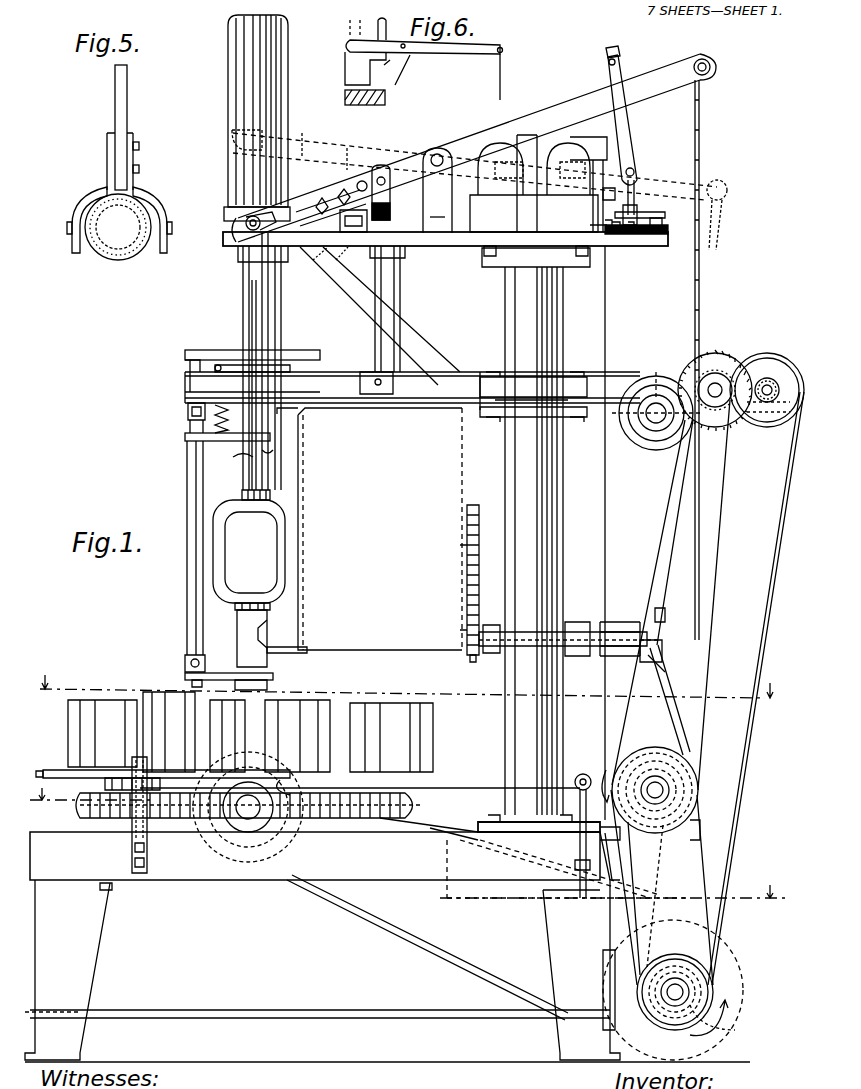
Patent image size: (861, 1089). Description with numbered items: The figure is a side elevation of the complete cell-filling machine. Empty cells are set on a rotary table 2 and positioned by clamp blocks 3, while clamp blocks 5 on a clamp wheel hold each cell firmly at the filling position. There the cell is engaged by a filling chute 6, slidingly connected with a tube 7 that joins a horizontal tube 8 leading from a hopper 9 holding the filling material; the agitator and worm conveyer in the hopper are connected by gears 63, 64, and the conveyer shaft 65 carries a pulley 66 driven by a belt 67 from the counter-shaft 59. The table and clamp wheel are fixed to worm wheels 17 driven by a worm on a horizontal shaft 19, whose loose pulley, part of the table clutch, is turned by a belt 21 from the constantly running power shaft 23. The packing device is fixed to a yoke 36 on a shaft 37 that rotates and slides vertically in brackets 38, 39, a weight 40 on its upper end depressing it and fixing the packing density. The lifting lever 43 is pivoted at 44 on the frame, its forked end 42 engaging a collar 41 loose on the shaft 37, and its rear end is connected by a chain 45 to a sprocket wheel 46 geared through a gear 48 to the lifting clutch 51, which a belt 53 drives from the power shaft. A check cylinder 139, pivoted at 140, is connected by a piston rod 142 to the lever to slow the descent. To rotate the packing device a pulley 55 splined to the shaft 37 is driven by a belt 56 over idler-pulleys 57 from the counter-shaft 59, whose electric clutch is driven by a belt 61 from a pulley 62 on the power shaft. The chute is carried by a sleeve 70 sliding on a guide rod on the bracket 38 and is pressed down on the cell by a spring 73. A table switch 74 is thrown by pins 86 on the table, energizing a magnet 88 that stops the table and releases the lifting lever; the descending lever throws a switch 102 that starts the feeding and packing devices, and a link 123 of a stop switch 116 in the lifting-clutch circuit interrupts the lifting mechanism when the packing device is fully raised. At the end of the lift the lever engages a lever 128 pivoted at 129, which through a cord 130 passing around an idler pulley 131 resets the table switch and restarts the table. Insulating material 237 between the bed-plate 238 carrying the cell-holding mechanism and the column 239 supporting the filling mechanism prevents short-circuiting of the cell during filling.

In FIG. 1, the rotary table 2 is at (413, 688).
In FIG. 1, the clamp blocks 3 is at (108, 687).
In FIG. 1, the clamp blocks 5 is at (390, 733).
In FIG. 1, the filling chute 6 is at (267, 683).
In FIG. 1, the tube 7 is at (250, 653).
In FIG. 1, the horizontal tube 8 is at (258, 640).
In FIG. 1, the hopper 9 is at (364, 530).
In FIG. 1, the worm wheels 17 is at (100, 805).
In FIG. 1, the horizontal shaft 19 is at (240, 820).
In FIG. 1, the belt 21 is at (420, 938).
In FIG. 1, the power shaft 23 is at (682, 995).
In FIG. 1, the yoke 36 is at (226, 548).
In FIG. 1, the shaft 37 is at (250, 312).
In FIG. 1, the bracket 38 is at (185, 398).
In FIG. 6, the bracket 39 is at (385, 98).
In FIG. 1, the bracket 39 is at (250, 240).
In FIG. 5, the weight 40 is at (125, 242).
In FIG. 1, the weight 40 is at (240, 100).
In FIG. 1, the collar 41 is at (246, 228).
In FIG. 5, the forked end 42 is at (160, 210).
In FIG. 1, the forked end 42 is at (286, 258).
In FIG. 5, the lifting lever 43 is at (127, 103).
In FIG. 1, the lifting lever 43 is at (410, 172).
In FIG. 1, the pivot 44 is at (443, 155).
In FIG. 1, the chain 45 is at (702, 145).
In FIG. 1, the sprocket wheel 46 is at (722, 378).
In FIG. 1, the gear 48 is at (710, 355).
In FIG. 1, the electric clutch 51 is at (767, 427).
In FIG. 1, the belt 53 is at (283, 360).
In FIG. 1, the pulley 55 is at (213, 368).
In FIG. 1, the belt 56 is at (474, 366).
In FIG. 1, the idler-pulleys 57 is at (656, 375).
In FIG. 1, the counter-shaft 59 is at (667, 786).
In FIG. 1, the belt 61 is at (730, 880).
In FIG. 1, the pulley 62 is at (690, 983).
In FIG. 1, the gear 63 is at (479, 512).
In FIG. 1, the gear 64 is at (479, 655).
In FIG. 1, the shaft of the conveyer 65 is at (610, 635).
In FIG. 1, the pulley 66 is at (662, 612).
In FIG. 1, the belt 67 is at (662, 675).
In FIG. 1, the sleeve 70 is at (187, 582).
In FIG. 1, the spring 73 is at (213, 425).
In FIG. 1, the rotary snap switch 74 is at (128, 820).
In FIG. 1, the pins 86 is at (60, 770).
In FIG. 1, the magnet 88 is at (555, 190).
In FIG. 1, the switch 102 is at (338, 205).
In FIG. 1, the bracket 116 is at (665, 214).
In FIG. 1, the link 123 is at (635, 125).
In FIG. 6, the lever 128 is at (455, 52).
In FIG. 1, the lever 128 is at (620, 190).
In FIG. 6, the pivot 129 is at (365, 60).
In FIG. 6, the cord 130 is at (502, 70).
In FIG. 1, the cord 130 is at (605, 570).
In FIG. 1, the idler pulley 131 is at (580, 775).
In FIG. 1, the cylinder 139 is at (402, 290).
In FIG. 1, the pivot 140 is at (376, 394).
In FIG. 1, the piston rod 142 is at (402, 218).
In FIG. 1, the insulating material 237 is at (470, 818).
In FIG. 1, the bed-plate 238 is at (568, 869).
In FIG. 1, the column 239 is at (526, 752).